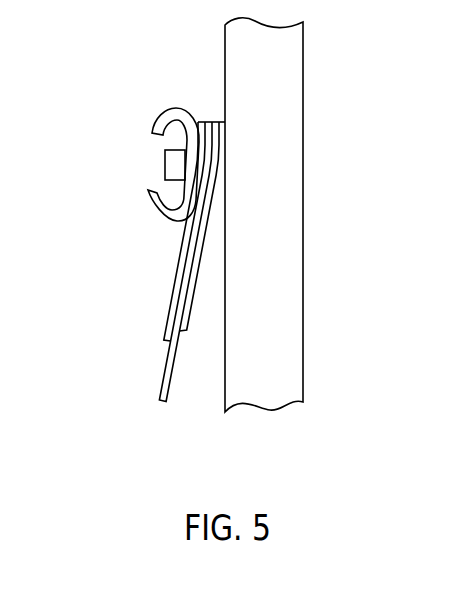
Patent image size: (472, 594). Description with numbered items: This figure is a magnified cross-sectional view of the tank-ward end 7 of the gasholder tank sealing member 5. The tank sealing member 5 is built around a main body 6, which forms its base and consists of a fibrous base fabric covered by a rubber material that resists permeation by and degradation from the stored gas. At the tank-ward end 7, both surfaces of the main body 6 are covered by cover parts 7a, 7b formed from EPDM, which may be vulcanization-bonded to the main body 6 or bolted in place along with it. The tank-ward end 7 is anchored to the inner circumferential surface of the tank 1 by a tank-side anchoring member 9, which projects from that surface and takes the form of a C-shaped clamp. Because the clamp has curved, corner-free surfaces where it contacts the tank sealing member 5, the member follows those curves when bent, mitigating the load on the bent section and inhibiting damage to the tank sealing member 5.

The tank 1 is at (292, 210).
The tank sealing member 5 is at (129, 293).
The main body 6 is at (165, 377).
The tank-ward end 7 is at (138, 293).
The cover part 7a is at (192, 312).
The cover part 7b is at (168, 325).
The tank-side anchoring member 9 is at (175, 118).